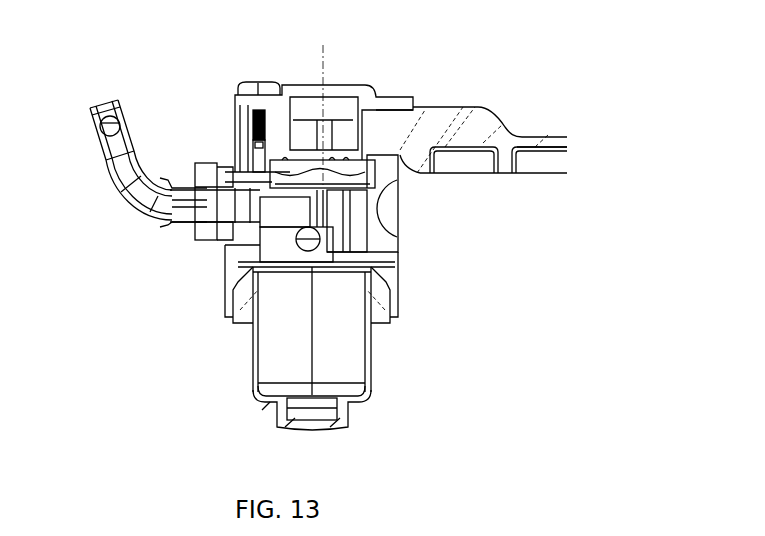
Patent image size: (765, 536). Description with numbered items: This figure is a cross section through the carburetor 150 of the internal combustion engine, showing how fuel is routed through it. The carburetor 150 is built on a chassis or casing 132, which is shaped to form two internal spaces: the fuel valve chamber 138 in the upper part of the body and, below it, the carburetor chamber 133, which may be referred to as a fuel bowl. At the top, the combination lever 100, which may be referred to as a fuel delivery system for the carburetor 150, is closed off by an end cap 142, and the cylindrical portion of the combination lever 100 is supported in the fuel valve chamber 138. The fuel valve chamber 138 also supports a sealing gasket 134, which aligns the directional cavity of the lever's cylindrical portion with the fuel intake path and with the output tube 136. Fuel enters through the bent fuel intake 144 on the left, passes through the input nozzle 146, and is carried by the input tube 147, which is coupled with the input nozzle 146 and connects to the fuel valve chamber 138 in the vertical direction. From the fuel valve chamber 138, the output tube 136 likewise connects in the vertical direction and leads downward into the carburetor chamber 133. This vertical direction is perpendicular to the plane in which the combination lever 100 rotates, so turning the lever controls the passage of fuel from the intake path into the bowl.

The combination lever 100 is at (420, 112).
The carburetor casing 132 is at (252, 373).
The carburetor chamber 133 is at (358, 365).
The sealing gasket 134 is at (380, 180).
The output tube 136 is at (340, 233).
The fuel valve chamber 138 is at (333, 178).
The end cap 142 is at (288, 88).
The fuel intake 144 is at (112, 175).
The input nozzle 146 is at (307, 203).
The input tube 147 is at (303, 215).
The carburetor 150 is at (304, 237).